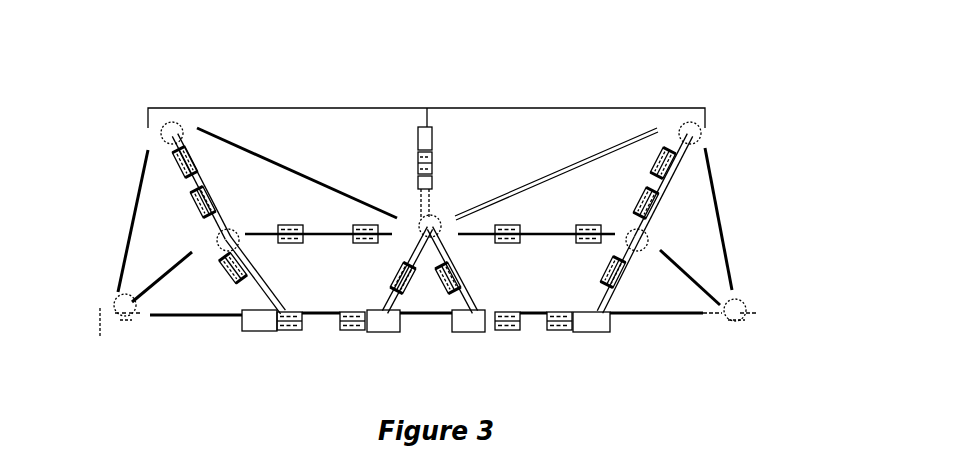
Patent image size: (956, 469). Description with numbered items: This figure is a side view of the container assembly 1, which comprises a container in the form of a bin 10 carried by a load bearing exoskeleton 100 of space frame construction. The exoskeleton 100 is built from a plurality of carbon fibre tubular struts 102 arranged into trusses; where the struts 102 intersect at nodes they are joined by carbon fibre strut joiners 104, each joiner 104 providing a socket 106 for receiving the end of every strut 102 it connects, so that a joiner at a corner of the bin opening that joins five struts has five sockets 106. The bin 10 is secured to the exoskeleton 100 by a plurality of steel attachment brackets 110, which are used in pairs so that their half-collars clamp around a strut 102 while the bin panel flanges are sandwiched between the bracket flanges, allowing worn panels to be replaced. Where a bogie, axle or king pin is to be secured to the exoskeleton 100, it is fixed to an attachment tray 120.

The container assembly 1 is at (451, 68).
The bin 10 is at (540, 106).
The exoskeleton 100 is at (732, 165).
The tubular strut 102 is at (138, 215).
The strut joiner 104 is at (100, 338).
The socket 106 is at (150, 133).
The attachment bracket 110 is at (423, 165).
The attachment tray 120 is at (135, 325).